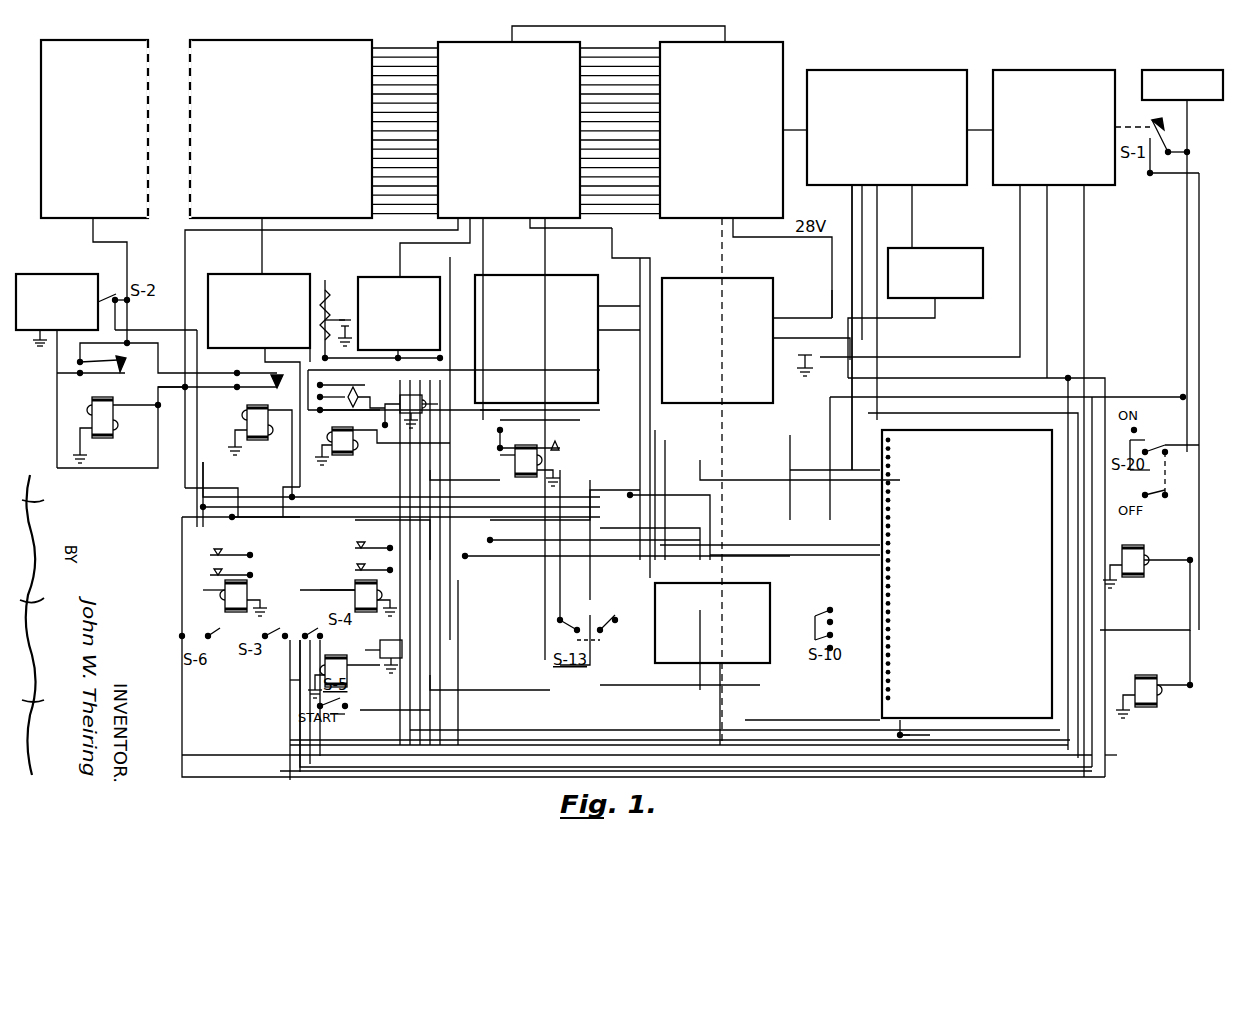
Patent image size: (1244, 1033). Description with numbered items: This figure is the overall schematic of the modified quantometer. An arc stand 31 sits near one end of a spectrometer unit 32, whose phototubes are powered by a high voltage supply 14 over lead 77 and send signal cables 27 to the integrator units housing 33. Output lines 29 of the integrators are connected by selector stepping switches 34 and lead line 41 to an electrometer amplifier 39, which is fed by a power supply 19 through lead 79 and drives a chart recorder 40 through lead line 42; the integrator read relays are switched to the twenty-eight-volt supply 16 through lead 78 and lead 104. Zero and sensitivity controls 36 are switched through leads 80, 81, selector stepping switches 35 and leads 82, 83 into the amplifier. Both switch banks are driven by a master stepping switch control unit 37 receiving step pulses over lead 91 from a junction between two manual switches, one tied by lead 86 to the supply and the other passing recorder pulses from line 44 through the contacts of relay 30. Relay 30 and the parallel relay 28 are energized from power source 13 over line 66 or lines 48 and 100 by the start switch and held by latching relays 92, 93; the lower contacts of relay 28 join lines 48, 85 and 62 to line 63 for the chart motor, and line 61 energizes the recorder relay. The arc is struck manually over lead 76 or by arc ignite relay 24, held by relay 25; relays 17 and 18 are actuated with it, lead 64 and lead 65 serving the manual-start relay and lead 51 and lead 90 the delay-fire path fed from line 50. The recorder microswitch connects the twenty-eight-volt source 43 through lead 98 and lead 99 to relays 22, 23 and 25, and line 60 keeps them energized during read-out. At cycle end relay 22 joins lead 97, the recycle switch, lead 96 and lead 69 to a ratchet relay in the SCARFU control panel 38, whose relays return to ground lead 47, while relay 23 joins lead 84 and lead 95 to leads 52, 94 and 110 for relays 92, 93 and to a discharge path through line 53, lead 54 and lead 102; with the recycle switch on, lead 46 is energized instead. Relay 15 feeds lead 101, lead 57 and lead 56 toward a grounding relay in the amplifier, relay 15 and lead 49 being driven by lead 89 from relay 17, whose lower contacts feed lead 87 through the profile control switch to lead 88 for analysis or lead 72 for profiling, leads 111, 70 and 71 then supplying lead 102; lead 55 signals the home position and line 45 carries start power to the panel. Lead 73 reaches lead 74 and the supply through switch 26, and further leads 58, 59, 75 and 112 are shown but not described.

The power source 13 is at (62, 272).
The high voltage supply 14 is at (246, 272).
The relay 15 is at (528, 476).
The 28-volt supply 16 is at (388, 274).
The relay 17 is at (377, 588).
The relay 18 is at (247, 590).
The power supply 19 is at (928, 298).
The relay 22 is at (1144, 548).
The relay 23 is at (1150, 705).
The arc ignite relay 24 is at (113, 437).
The relay 25 is at (258, 440).
The switch 26 is at (915, 738).
The signal cables 27 is at (402, 82).
The relay 28 is at (345, 455).
The output lines 29 is at (612, 90).
The relay 30 is at (347, 680).
The arc stand 31 is at (83, 193).
The spectrometer unit 32 is at (270, 193).
The integrator units housing 33 is at (498, 196).
The selector stepping switches 34 is at (710, 196).
The selector stepping switches 35 is at (714, 277).
The zero and sensitivity controls 36 is at (530, 275).
The master stepping switch control unit 37 is at (655, 590).
The SCARFU control panel 38 is at (970, 668).
The electrometer amplifier 39 is at (876, 165).
The chart recorder 40 is at (1043, 165).
The lead line 41 is at (797, 128).
The lead line 42 is at (983, 128).
The 28-volt D.C. source 43 is at (1146, 74).
The line 44 is at (1084, 268).
The line 45 is at (710, 506).
The lead 46 is at (967, 413).
The ground lead 47 is at (790, 437).
The line 48 is at (57, 405).
The lead 49 is at (530, 534).
The line 50 is at (832, 280).
The lead 51 is at (538, 512).
The lead 52 is at (1093, 376).
The 28-volt D.C. line 53 is at (1040, 397).
The lead 54 is at (702, 487).
The lead 55 is at (673, 458).
The lead 56 is at (852, 326).
The lead 57 is at (764, 566).
The lead 58 is at (698, 550).
The lead 59 is at (832, 258).
The line 60 is at (778, 712).
The line 61 is at (1020, 326).
The line 62 is at (540, 565).
The line 63 is at (1047, 215).
The lead 64 is at (172, 332).
The lead 65 is at (596, 530).
The line 66 is at (375, 712).
The lead 69 is at (983, 770).
The lead 70 is at (655, 437).
The lead 71 is at (700, 690).
The lead 72 is at (620, 688).
The lead 73 is at (450, 260).
The lead 74 is at (430, 473).
The lead 75 is at (545, 238).
The lead 76 is at (127, 248).
The lead 77 is at (262, 248).
The lead 78 is at (733, 236).
The lead 79 is at (912, 215).
The lead 80 is at (619, 293).
The lead 81 is at (619, 351).
The lead 82 is at (786, 318).
The lead 83 is at (786, 338).
The lead 84 is at (182, 695).
The line 85 is at (308, 480).
The lead 86 is at (300, 362).
The lead 87 is at (517, 680).
The lead 88 is at (612, 260).
The lead 89 is at (438, 547).
The lead 90 is at (158, 452).
The lead 91 is at (720, 708).
The latching relay 92 is at (392, 640).
The latching relay 93 is at (405, 388).
The lead 94 is at (420, 745).
The lead 95 is at (1184, 632).
The lead 96 is at (1118, 496).
The lead 97 is at (1187, 298).
The lead 98 is at (1199, 298).
The lead 99 is at (292, 478).
The line 100 is at (330, 600).
The lead 101 is at (588, 455).
The lead 102 is at (598, 230).
The lead 104 is at (725, 32).
The lead 110 is at (458, 596).
The lead 111 is at (598, 642).
The lead 112 is at (190, 235).